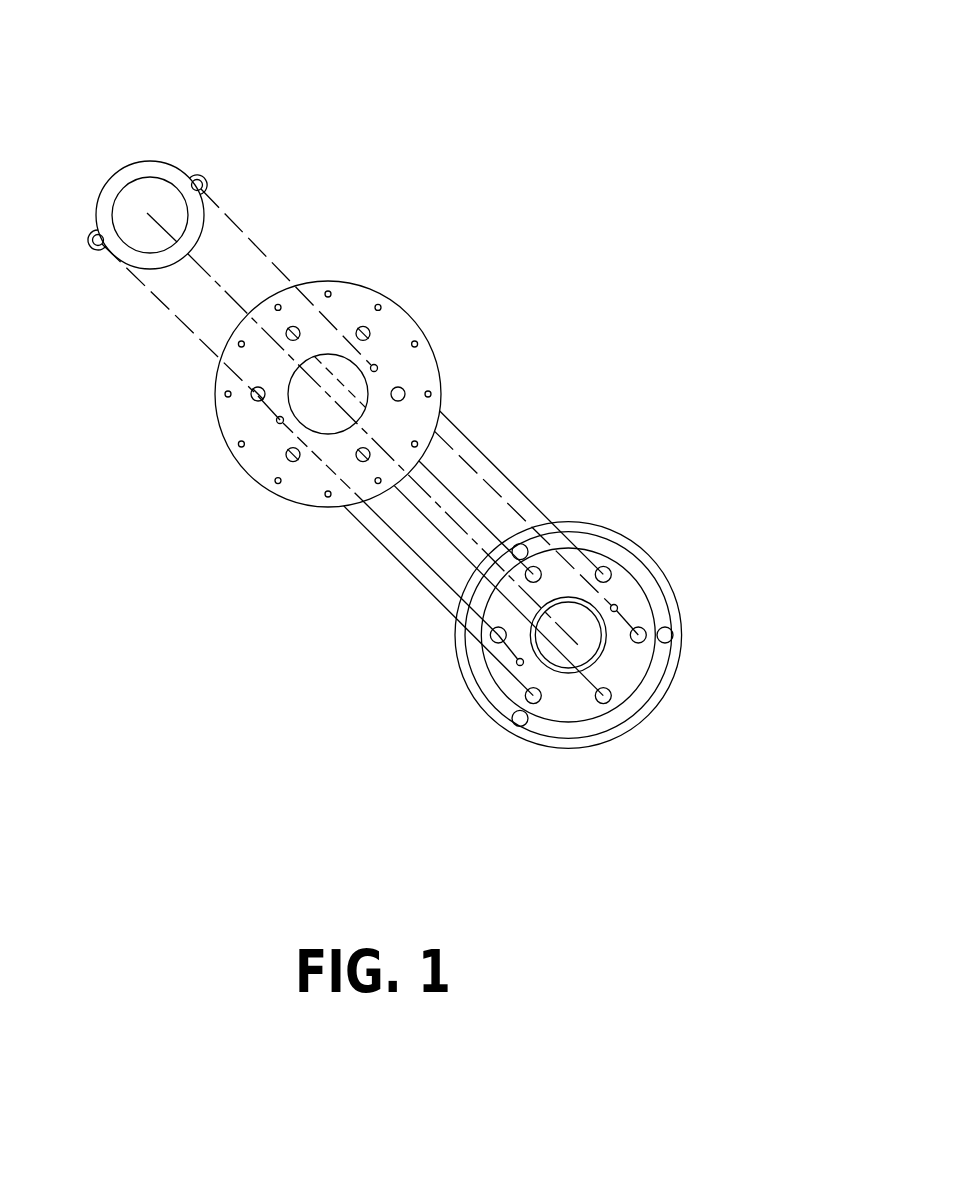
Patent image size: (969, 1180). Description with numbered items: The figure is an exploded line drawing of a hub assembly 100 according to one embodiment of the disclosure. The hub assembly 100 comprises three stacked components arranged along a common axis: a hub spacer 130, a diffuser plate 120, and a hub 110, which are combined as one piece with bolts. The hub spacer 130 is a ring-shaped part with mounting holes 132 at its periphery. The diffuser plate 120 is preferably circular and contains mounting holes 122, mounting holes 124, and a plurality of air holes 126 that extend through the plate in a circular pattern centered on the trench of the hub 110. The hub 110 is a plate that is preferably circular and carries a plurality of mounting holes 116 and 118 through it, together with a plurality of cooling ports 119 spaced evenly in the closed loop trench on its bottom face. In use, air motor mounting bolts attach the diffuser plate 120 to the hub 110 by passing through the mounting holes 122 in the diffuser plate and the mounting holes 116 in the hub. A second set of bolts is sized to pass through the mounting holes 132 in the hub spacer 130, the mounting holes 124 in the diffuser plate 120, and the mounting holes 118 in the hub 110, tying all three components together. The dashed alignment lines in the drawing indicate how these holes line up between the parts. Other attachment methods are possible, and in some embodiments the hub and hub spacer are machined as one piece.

The hub assembly 100 is at (518, 106).
The hub 110 is at (585, 520).
The mounting holes 116 is at (641, 632).
The mounting holes 118 is at (617, 605).
The cooling ports 119 is at (672, 638).
The diffuser plate 120 is at (407, 312).
The mounting holes 122 is at (363, 326).
The mounting holes 124 is at (378, 368).
The air holes 126 is at (275, 481).
The hub spacer 130 is at (203, 178).
The mounting holes 132 is at (197, 180).